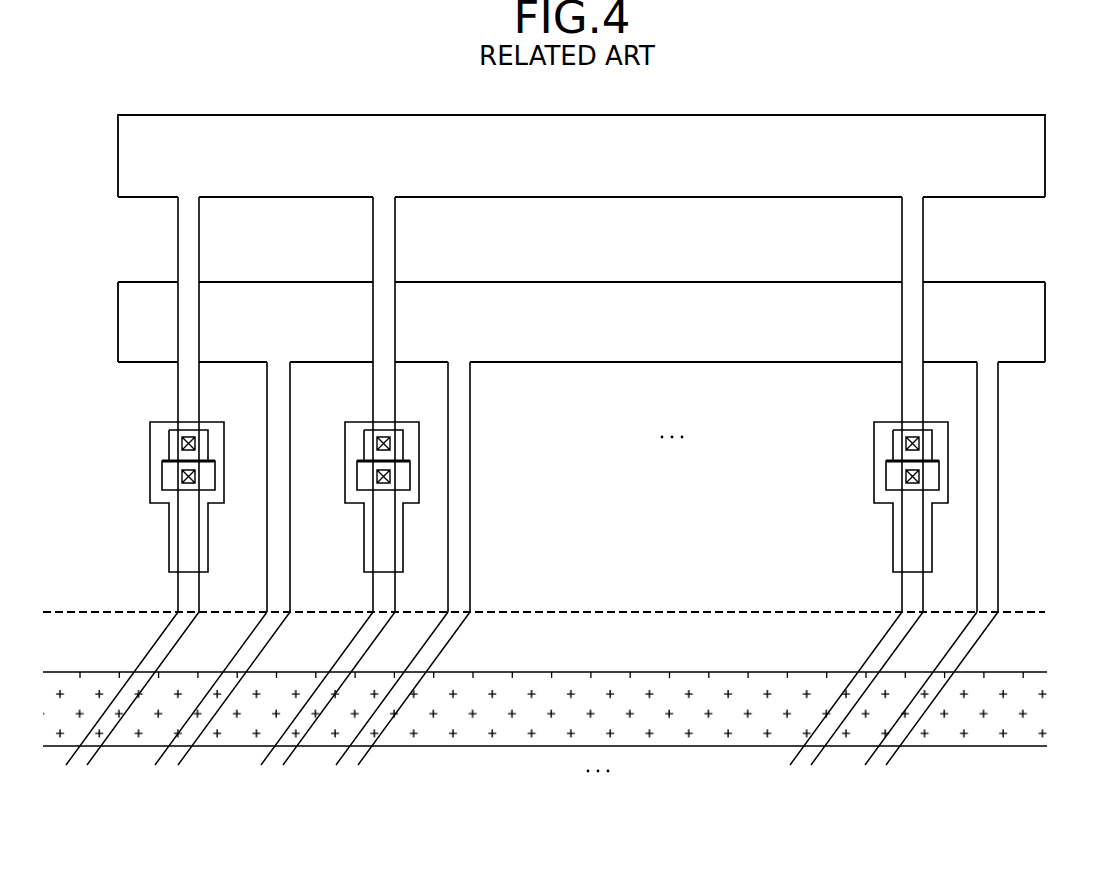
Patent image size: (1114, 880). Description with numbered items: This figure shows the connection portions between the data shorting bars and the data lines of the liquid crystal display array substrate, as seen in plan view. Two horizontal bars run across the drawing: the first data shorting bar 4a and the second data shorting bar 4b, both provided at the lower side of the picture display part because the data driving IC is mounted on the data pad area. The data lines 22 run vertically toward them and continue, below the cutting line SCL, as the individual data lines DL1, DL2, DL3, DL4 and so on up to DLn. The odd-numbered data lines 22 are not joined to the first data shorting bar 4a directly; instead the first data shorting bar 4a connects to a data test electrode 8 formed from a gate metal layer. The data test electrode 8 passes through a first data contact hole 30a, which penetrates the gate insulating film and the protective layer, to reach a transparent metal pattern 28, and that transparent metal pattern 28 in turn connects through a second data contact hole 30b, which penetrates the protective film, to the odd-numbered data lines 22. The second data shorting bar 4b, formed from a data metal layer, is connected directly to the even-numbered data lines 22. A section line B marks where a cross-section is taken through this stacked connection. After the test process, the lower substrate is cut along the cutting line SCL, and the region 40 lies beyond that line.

The first data shorting bar 4a is at (1047, 340).
The second data shorting bar 4b is at (1047, 155).
The data test electrode 8 is at (177, 410).
The data line 22 is at (290, 456).
The transparent metal pattern 28 is at (150, 483).
The first data contact hole 30a is at (197, 447).
The second data contact hole 30b is at (197, 478).
The seal pattern 40 is at (1057, 696).
The cutting line SCL is at (569, 612).
The section line B-B' B is at (173, 635).
The data line DL1 is at (124, 704).
The data line DL2 is at (215, 704).
The data line DL3 is at (320, 704).
The data line DL4 is at (395, 704).
The data line DLn is at (927, 704).